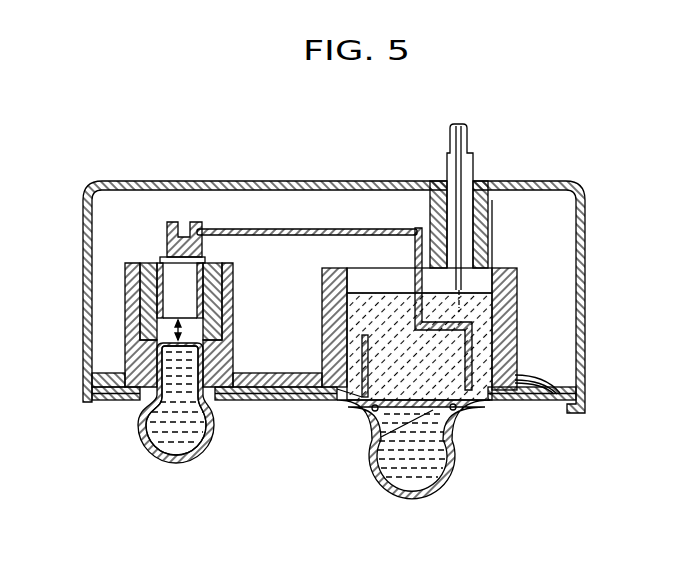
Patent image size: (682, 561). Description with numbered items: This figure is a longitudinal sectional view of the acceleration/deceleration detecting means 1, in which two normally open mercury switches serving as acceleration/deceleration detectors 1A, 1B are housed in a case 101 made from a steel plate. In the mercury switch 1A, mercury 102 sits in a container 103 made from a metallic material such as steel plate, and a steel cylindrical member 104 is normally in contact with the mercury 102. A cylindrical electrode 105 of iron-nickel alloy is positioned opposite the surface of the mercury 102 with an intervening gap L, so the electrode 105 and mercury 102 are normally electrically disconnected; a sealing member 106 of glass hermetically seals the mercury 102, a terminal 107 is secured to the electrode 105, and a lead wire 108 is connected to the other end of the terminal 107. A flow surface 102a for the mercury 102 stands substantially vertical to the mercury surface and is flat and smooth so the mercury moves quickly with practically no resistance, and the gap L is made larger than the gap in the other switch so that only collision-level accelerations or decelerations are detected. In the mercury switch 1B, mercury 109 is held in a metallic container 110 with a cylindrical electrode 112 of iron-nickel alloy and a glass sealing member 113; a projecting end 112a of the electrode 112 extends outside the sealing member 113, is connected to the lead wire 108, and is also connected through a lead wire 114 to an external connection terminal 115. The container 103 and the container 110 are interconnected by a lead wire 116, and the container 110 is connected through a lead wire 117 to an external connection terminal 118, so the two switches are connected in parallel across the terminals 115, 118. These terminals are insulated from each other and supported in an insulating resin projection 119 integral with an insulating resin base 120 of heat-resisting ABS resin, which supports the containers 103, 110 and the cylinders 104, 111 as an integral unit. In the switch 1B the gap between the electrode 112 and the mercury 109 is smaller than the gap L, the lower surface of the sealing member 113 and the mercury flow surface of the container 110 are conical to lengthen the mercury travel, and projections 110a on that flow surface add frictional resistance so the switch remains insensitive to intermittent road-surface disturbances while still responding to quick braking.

The acceleration/deceleration detecting means 1 is at (83, 192).
The mercury switch 1A is at (117, 287).
The mercury switch 1B is at (525, 307).
The case 101 is at (586, 300).
The mercury 102 is at (157, 421).
The flow surface 102a is at (132, 376).
The container 103 is at (157, 443).
The cylindrical member 104 is at (233, 349).
The cylindrical electrode 105 is at (200, 287).
The sealing member 106 is at (140, 322).
The terminal 107 is at (170, 228).
The lead wire 108 is at (221, 229).
The mercury 109 is at (410, 462).
The container 110 is at (481, 399).
The projections 110a is at (462, 463).
The cylinder 111 is at (518, 283).
The cylindrical electrode 112 is at (347, 320).
The projecting end 112a is at (430, 240).
The sealing member 113 is at (494, 266).
The lead wire 114 is at (422, 309).
The external connection terminal 115 is at (479, 190).
The lead wire 116 is at (273, 401).
The lead wire 117 is at (531, 377).
The external connection terminal 118 is at (457, 124).
The insulating resin projection 119 is at (494, 213).
The insulating resin base 120 is at (540, 401).
The gap L is at (185, 323).